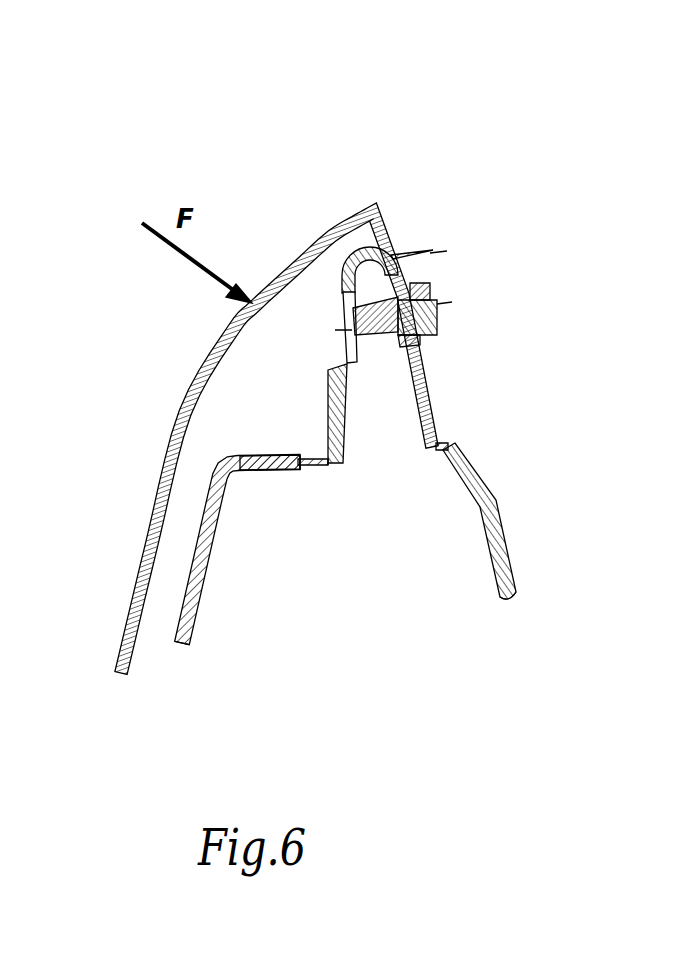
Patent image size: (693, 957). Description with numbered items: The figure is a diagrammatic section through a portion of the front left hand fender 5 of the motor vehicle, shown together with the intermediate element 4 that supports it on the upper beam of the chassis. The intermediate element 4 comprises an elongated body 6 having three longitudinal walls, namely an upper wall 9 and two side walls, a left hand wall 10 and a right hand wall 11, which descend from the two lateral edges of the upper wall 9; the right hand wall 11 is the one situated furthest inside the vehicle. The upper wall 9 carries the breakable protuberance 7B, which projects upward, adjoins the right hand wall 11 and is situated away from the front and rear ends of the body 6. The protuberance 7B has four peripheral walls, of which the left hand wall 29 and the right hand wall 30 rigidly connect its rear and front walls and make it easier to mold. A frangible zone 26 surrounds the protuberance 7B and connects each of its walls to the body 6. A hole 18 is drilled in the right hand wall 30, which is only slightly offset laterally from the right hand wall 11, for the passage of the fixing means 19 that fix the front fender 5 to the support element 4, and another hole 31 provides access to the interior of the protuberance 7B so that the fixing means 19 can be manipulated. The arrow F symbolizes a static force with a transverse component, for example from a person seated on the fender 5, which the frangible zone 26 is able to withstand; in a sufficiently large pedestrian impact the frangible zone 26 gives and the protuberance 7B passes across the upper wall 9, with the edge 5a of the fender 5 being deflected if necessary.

The intermediate element 4 is at (510, 551).
The front left hand fender 5 is at (147, 543).
The edge of the fender 5a is at (428, 364).
The elongated body 6 is at (193, 620).
The breakable protuberance 7B is at (362, 242).
The upper wall 9 is at (257, 458).
The left hand wall 10 is at (205, 568).
The right hand wall 11 is at (478, 477).
The hole 18 is at (397, 340).
The fixing means 19 is at (436, 357).
The frangible zone 26 is at (317, 465).
The left hand wall 29 is at (330, 408).
The right hand wall 30 is at (425, 393).
The hole 31 is at (345, 312).